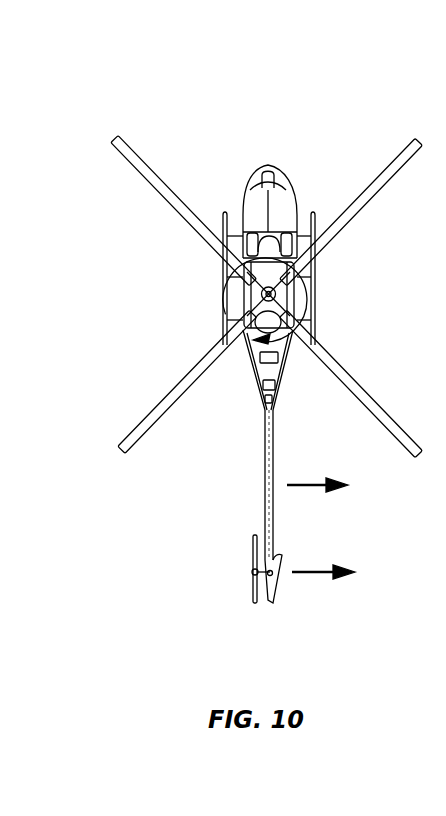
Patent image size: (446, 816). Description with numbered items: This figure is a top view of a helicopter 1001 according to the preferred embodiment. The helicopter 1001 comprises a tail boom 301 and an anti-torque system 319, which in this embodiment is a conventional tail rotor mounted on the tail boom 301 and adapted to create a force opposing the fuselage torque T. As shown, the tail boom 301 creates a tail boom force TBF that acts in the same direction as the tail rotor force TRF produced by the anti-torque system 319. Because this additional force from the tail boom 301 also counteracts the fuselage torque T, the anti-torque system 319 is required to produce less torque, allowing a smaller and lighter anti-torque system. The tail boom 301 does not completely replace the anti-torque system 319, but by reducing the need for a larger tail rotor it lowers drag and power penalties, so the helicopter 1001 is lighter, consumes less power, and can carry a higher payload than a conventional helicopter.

The helicopter 1001 is at (190, 100).
The fuselage torque T is at (308, 284).
The tail boom 301 is at (274, 469).
The anti-torque system 319 is at (232, 602).
The tail boom force TBF is at (305, 487).
The tail rotor force TRF is at (313, 574).